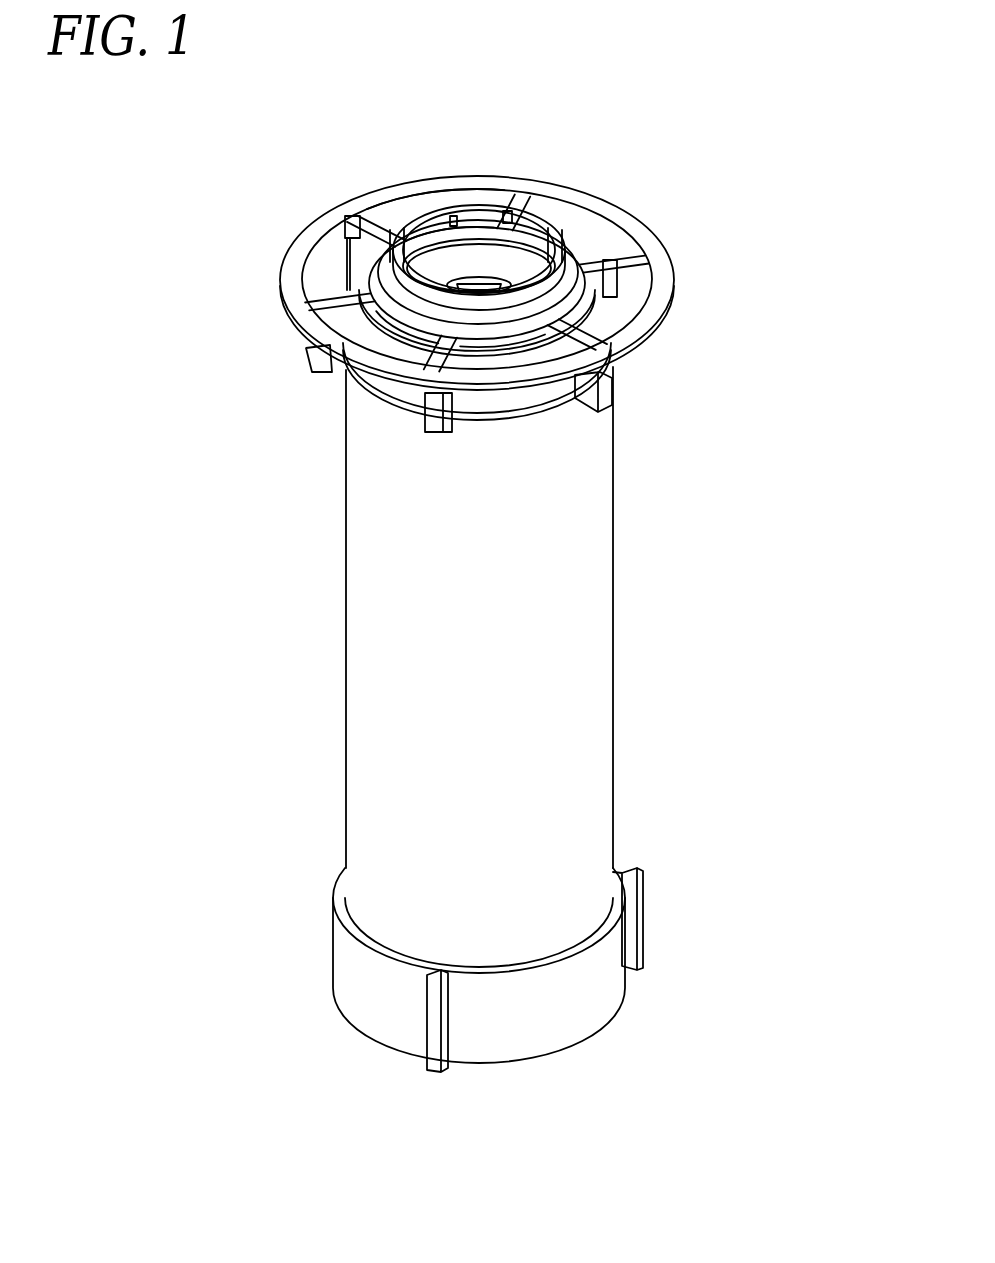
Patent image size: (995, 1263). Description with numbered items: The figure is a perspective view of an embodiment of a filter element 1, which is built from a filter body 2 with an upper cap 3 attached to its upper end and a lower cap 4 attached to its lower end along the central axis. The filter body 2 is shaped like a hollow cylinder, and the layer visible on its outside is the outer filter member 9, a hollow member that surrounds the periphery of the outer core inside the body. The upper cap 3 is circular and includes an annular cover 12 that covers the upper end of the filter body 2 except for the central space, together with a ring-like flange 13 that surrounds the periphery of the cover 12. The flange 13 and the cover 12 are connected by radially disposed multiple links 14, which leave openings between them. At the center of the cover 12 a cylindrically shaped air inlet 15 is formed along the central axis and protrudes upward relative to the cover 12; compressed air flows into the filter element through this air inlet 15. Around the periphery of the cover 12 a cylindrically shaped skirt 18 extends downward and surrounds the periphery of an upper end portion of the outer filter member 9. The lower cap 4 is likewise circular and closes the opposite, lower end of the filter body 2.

The filter element 1 is at (488, 575).
The filter body 2 is at (483, 617).
The upper cap 3 is at (456, 234).
The lower cap 4 is at (358, 961).
The outer filter member 9 is at (406, 692).
The cover 12 is at (378, 248).
The flange 13 is at (380, 200).
The links 14 is at (332, 298).
The air inlet 15 is at (477, 232).
The skirt 18 is at (412, 397).